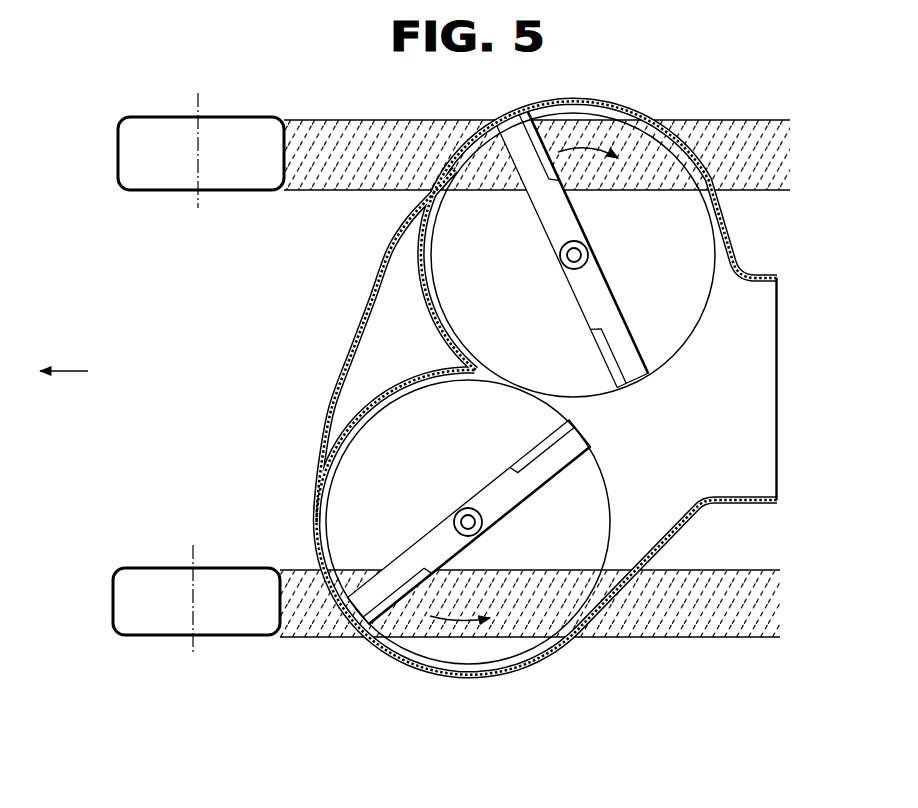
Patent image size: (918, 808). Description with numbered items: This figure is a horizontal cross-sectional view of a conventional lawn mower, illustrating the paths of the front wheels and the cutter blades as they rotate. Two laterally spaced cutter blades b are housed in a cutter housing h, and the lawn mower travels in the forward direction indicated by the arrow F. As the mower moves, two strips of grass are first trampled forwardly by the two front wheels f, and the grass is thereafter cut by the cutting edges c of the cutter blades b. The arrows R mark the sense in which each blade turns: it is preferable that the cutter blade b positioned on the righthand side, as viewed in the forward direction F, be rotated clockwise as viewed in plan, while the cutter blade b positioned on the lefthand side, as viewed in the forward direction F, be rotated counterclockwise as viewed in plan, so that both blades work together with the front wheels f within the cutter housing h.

The front wheels f is at (118, 153).
The cutter housing h is at (357, 323).
The cutter blades b is at (567, 228).
The cutting edges c is at (600, 352).
The direction of rotation R is at (538, 390).
The forward direction F is at (50, 370).